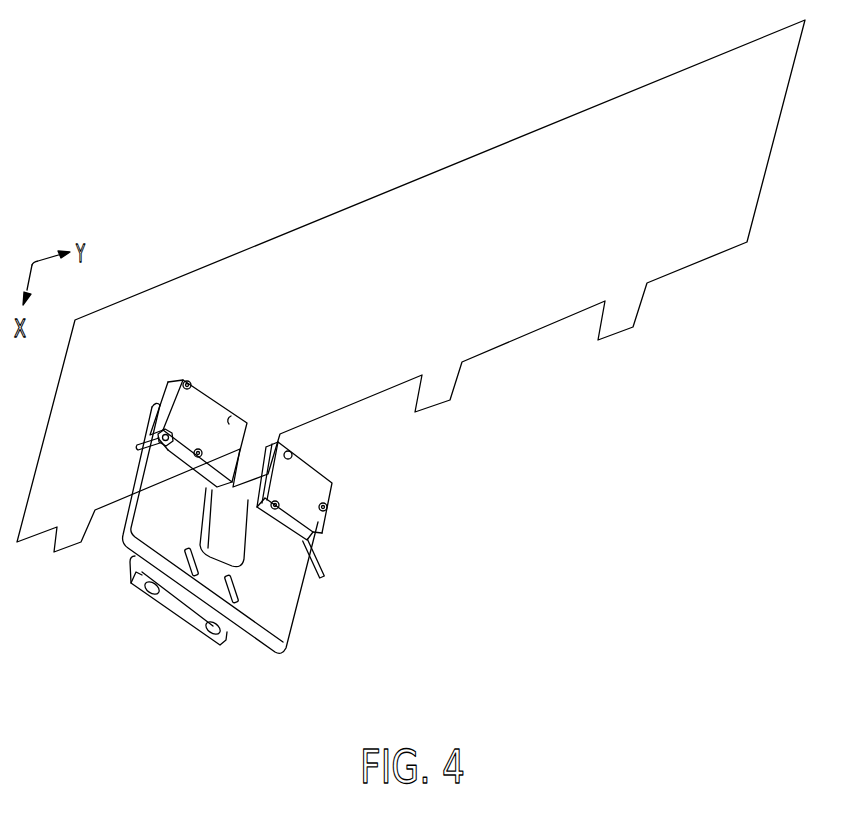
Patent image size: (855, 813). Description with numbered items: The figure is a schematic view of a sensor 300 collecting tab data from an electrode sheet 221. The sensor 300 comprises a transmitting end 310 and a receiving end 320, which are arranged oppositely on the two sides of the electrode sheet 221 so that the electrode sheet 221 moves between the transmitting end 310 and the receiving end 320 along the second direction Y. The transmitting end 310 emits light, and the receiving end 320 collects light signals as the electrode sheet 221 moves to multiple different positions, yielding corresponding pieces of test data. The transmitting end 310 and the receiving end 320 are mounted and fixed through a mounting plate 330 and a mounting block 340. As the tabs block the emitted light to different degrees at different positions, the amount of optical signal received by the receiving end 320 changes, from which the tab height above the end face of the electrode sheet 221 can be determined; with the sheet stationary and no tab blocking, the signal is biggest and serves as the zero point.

The electrode sheet 221 is at (485, 163).
The sensor 300 is at (281, 550).
The transmitting end 310 is at (207, 437).
The receiving end 320 is at (385, 430).
The mounting plate 330 is at (277, 607).
The mounting block 340 is at (170, 588).